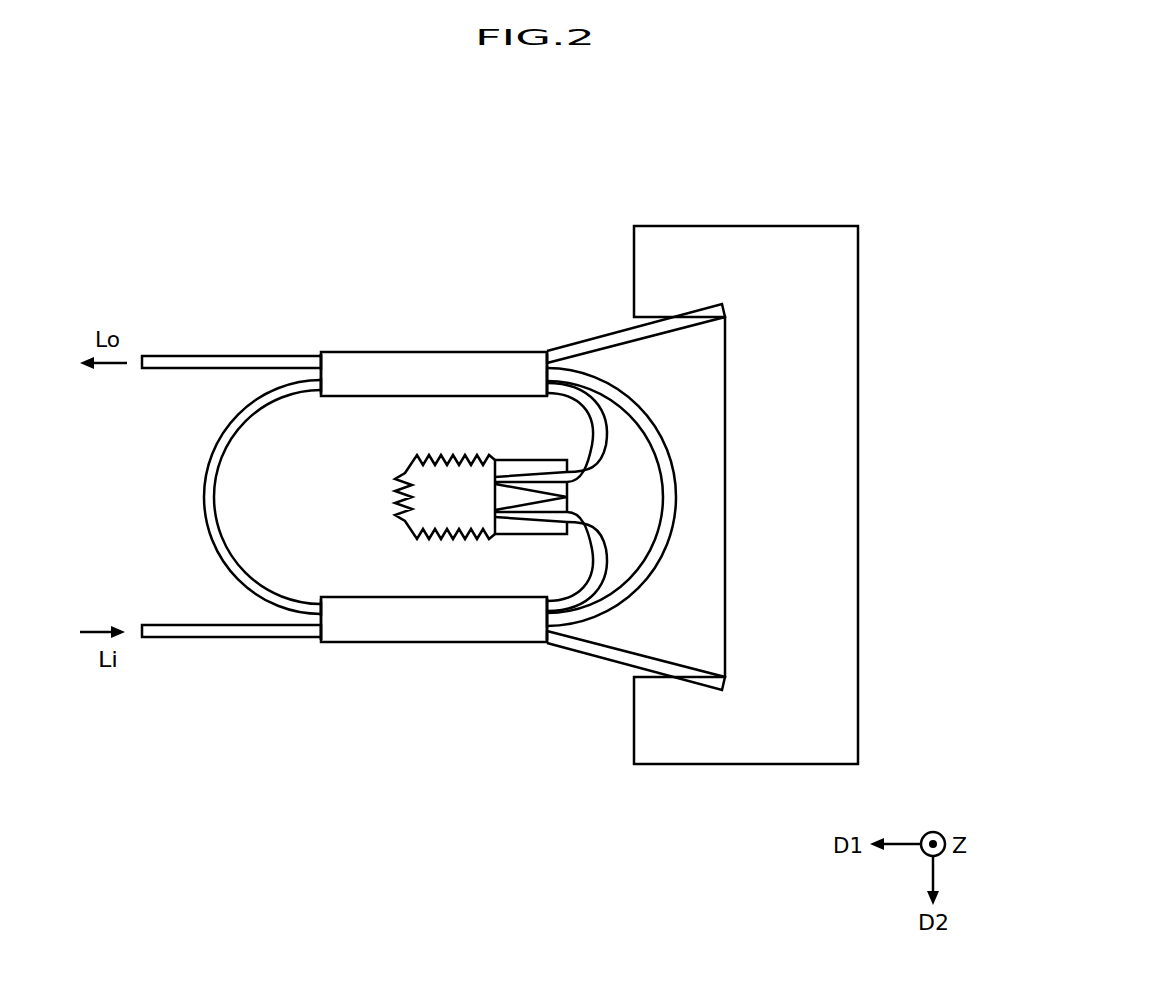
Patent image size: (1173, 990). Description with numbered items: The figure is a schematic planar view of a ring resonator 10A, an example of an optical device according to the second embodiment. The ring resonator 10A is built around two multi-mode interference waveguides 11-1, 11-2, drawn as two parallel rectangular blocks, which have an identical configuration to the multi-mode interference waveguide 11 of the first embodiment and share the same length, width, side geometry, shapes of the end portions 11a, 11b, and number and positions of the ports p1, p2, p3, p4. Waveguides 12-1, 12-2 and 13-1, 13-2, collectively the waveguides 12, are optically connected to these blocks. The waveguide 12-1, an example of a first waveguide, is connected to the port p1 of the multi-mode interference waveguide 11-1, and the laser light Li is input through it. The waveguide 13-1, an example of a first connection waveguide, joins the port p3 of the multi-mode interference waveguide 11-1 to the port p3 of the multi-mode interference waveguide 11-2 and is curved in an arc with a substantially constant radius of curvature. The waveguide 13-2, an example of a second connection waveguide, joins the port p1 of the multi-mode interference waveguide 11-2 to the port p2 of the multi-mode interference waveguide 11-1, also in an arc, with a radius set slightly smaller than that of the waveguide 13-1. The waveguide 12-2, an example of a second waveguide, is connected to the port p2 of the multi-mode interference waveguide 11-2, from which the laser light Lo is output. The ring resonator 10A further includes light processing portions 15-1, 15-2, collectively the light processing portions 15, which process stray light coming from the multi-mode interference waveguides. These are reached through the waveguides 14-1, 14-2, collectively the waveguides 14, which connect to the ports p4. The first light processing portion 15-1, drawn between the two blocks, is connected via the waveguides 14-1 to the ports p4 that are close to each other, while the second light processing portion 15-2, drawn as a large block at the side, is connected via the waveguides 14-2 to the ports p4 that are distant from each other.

The ring resonator 10A is at (594, 176).
The multi-mode interference waveguide 11 is at (440, 497).
The multi-mode interference waveguide 11-1 is at (437, 654).
The multi-mode interference waveguide 11-2 is at (436, 343).
The end portion 11a is at (318, 377).
The end portion 11b is at (560, 375).
The port p1 is at (320, 394).
The port p2 is at (322, 350).
The port p3 is at (583, 382).
The port p4 is at (548, 350).
The waveguide 12 is at (409, 499).
The first waveguide 12-1 is at (188, 632).
The second waveguide 12-2 is at (188, 362).
The first connection waveguide 13-1 is at (677, 500).
The second connection waveguide 13-2 is at (204, 492).
The waveguide 14 is at (636, 498).
The waveguide 14-1 is at (604, 472).
The waveguide 14-2 is at (595, 705).
The light processing portion 15 is at (625, 495).
The first light processing portion 15-1 is at (376, 490).
The second light processing portion 15-2 is at (870, 455).